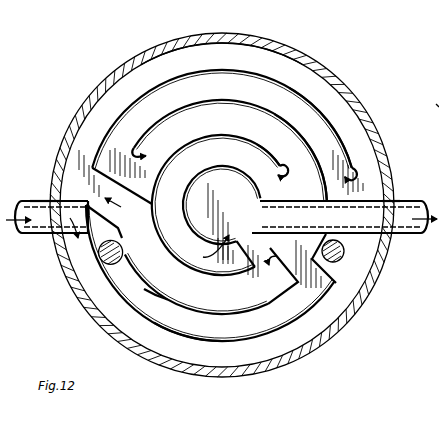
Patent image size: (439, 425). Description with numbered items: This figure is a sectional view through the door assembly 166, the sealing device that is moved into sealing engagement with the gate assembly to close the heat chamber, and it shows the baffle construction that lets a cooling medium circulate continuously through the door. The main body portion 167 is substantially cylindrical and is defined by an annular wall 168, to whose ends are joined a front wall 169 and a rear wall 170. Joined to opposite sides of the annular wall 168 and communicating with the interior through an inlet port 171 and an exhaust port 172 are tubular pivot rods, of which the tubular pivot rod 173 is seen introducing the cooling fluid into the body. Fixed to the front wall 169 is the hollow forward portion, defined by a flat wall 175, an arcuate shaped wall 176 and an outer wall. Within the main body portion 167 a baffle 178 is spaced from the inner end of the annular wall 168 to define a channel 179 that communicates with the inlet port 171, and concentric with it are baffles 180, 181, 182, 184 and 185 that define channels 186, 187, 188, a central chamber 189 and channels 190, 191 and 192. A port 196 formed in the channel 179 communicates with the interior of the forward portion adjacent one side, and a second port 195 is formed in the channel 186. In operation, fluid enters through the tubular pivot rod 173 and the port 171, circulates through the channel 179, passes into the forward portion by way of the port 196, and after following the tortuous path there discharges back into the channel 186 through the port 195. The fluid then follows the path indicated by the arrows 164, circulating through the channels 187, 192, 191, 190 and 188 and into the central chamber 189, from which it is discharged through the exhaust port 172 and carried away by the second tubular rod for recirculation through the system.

The flow arrow 164 is at (138, 146).
The door assembly 166 is at (334, 72).
The main body portion 167 is at (357, 104).
The annular wall 168 is at (300, 60).
The front wall 169 is at (240, 52).
The rear wall 170 is at (438, 111).
The inlet port 171 is at (53, 224).
The exhaust port 172 is at (397, 201).
The tubular pivot rod 173 is at (411, 207).
The flat wall 175 is at (40, 201).
The arcuate shaped wall 176 is at (433, 361).
The baffle 178 is at (253, 343).
The channel 179 is at (186, 352).
The baffle 180 is at (199, 308).
The baffle 181 is at (224, 251).
The baffle 182 is at (204, 238).
The baffle 184 is at (182, 105).
The baffle 185 is at (183, 73).
The channel 186 is at (177, 320).
The channel 187 is at (252, 299).
The channel 188 is at (219, 159).
The central chamber 189 is at (236, 190).
The channel 190 is at (282, 139).
The channel 191 is at (283, 105).
The channel 192 is at (320, 90).
The second port 195 is at (99, 252).
The port 196 is at (343, 253).